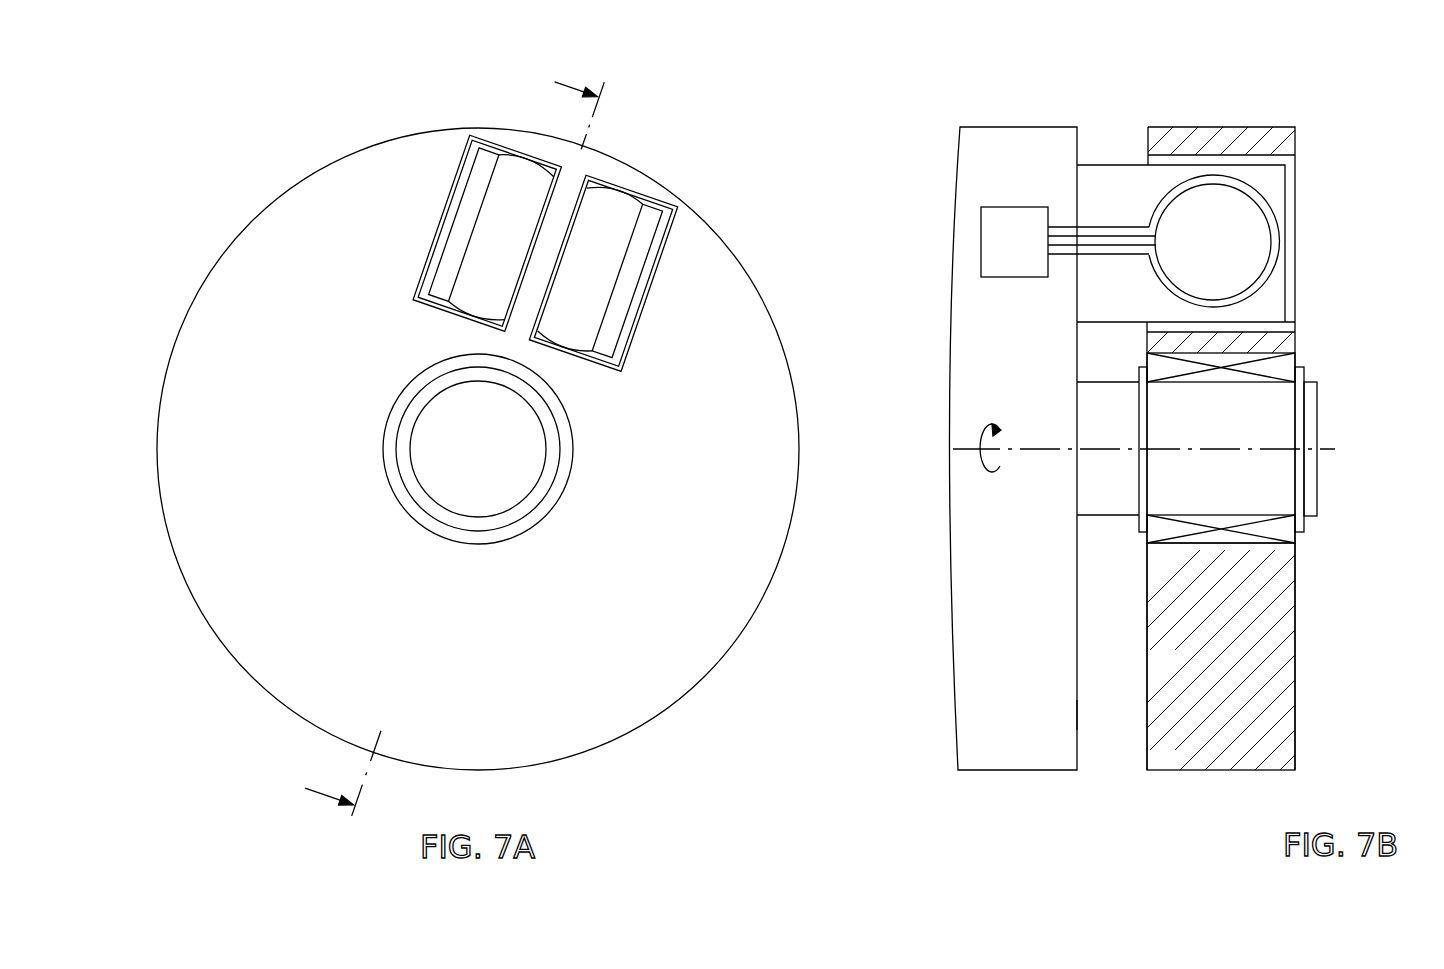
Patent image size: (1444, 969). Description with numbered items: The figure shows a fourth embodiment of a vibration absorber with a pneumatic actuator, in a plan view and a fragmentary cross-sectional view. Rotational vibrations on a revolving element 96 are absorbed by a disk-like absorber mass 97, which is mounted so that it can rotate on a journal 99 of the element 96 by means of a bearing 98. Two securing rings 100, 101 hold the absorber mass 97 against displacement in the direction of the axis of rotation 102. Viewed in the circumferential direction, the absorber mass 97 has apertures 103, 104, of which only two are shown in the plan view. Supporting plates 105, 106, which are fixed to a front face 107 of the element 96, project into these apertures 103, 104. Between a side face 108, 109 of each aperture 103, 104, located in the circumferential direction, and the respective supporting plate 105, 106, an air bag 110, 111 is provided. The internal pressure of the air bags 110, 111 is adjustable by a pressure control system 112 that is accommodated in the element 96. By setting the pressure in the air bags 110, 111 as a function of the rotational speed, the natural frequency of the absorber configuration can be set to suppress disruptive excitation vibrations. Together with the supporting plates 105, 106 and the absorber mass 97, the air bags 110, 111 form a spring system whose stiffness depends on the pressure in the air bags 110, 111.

In FIG. 7B, the revolving element 96 is at (1023, 738).
In FIG. 7B, the absorber mass 97 is at (1220, 733).
In FIG. 7B, the bearing 98 is at (1279, 370).
In FIG. 7B, the journal 99 is at (1310, 429).
In FIG. 7B, the securing ring 100 is at (1305, 522).
In FIG. 7B, the securing ring 101 is at (1143, 524).
In FIG. 7B, the axis of rotation 102 is at (1033, 450).
In FIG. 7A, the aperture 103 is at (583, 355).
In FIG. 7B, the aperture 103 is at (1288, 183).
In FIG. 7A, the aperture 104 is at (458, 310).
In FIG. 7A, the supporting plate 105 is at (630, 284).
In FIG. 7A, the supporting plate 106 is at (468, 213).
In FIG. 7B, the front face 107 is at (1077, 717).
In FIG. 7A, the side face 108 is at (590, 182).
In FIG. 7A, the side face 109 is at (537, 157).
In FIG. 7A, the air bag 110 is at (595, 260).
In FIG. 7B, the air bag 110 is at (1245, 248).
In FIG. 7A, the air bag 111 is at (487, 262).
In FIG. 7B, the pressure control system 112 is at (1018, 207).